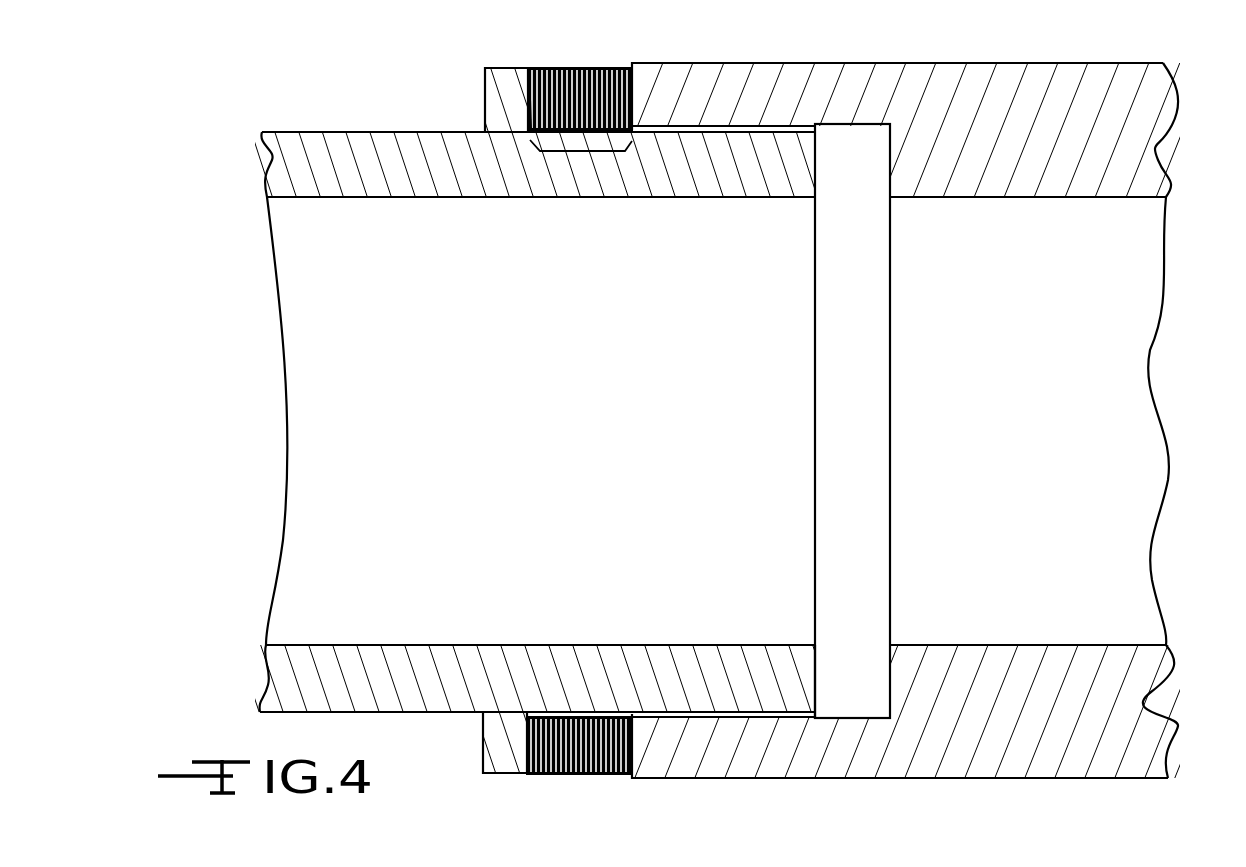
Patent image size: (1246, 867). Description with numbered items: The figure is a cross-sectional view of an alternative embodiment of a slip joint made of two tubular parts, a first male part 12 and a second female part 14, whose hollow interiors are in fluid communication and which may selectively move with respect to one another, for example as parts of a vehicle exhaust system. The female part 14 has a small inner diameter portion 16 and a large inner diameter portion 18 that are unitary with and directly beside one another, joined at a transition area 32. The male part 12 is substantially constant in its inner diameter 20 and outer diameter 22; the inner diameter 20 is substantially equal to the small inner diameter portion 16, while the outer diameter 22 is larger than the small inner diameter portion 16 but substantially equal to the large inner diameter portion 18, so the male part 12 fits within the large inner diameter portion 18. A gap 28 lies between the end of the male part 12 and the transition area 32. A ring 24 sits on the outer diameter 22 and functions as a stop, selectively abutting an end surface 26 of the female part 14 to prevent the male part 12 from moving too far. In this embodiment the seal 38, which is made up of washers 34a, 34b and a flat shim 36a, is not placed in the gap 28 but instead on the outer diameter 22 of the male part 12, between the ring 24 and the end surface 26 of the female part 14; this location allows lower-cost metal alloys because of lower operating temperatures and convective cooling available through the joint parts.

The first male part 12 is at (268, 122).
The second female part 14 is at (1168, 63).
The small inner diameter portion 16 is at (998, 648).
The large inner diameter portion 18 is at (729, 720).
The inner diameter 20 is at (309, 201).
The outer diameter 22 is at (342, 130).
The ring 24 is at (483, 83).
The end surface 26 is at (636, 95).
The gap 28 is at (862, 172).
The transition area 32 is at (853, 700).
The washer 34a is at (531, 70).
The washer 34b is at (535, 70).
The flat shim 36a is at (546, 70).
The seal 38 is at (580, 155).